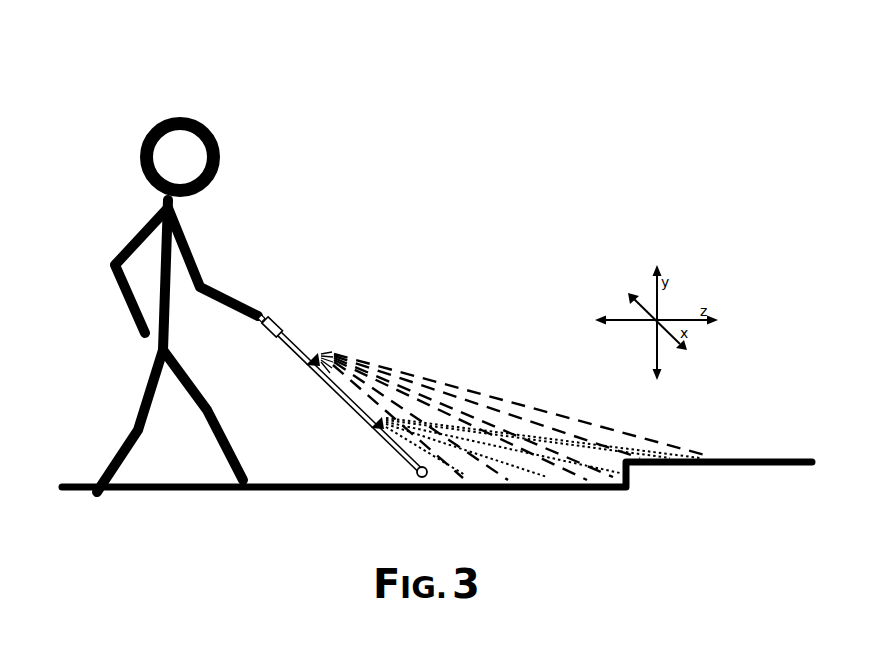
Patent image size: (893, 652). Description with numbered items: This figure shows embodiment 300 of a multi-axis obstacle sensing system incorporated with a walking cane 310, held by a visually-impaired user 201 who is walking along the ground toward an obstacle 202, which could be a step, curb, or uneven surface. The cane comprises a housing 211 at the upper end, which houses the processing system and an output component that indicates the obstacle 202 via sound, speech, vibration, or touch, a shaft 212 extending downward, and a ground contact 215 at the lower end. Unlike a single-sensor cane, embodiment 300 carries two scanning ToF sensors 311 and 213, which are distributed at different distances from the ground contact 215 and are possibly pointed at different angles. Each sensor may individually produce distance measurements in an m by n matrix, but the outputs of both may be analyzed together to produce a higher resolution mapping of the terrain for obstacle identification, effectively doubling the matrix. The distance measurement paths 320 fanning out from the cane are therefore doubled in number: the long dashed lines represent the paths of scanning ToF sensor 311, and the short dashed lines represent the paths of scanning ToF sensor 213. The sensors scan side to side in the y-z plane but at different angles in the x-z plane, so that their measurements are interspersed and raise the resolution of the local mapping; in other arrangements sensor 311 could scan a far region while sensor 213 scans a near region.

The embodiment of a multi-axis obstacle sensing system incorporated with a walking c 300 is at (59, 82).
The user 201 is at (153, 124).
The obstacle 202 is at (631, 471).
The housing 211 is at (278, 320).
The shaft 212 is at (344, 401).
The scanning ToF sensor 213 is at (372, 430).
The ground contact 215 is at (417, 479).
The scanning ToF sensor 311 is at (306, 368).
The walking cane 310 is at (457, 302).
The distance measurement paths 320 is at (536, 383).